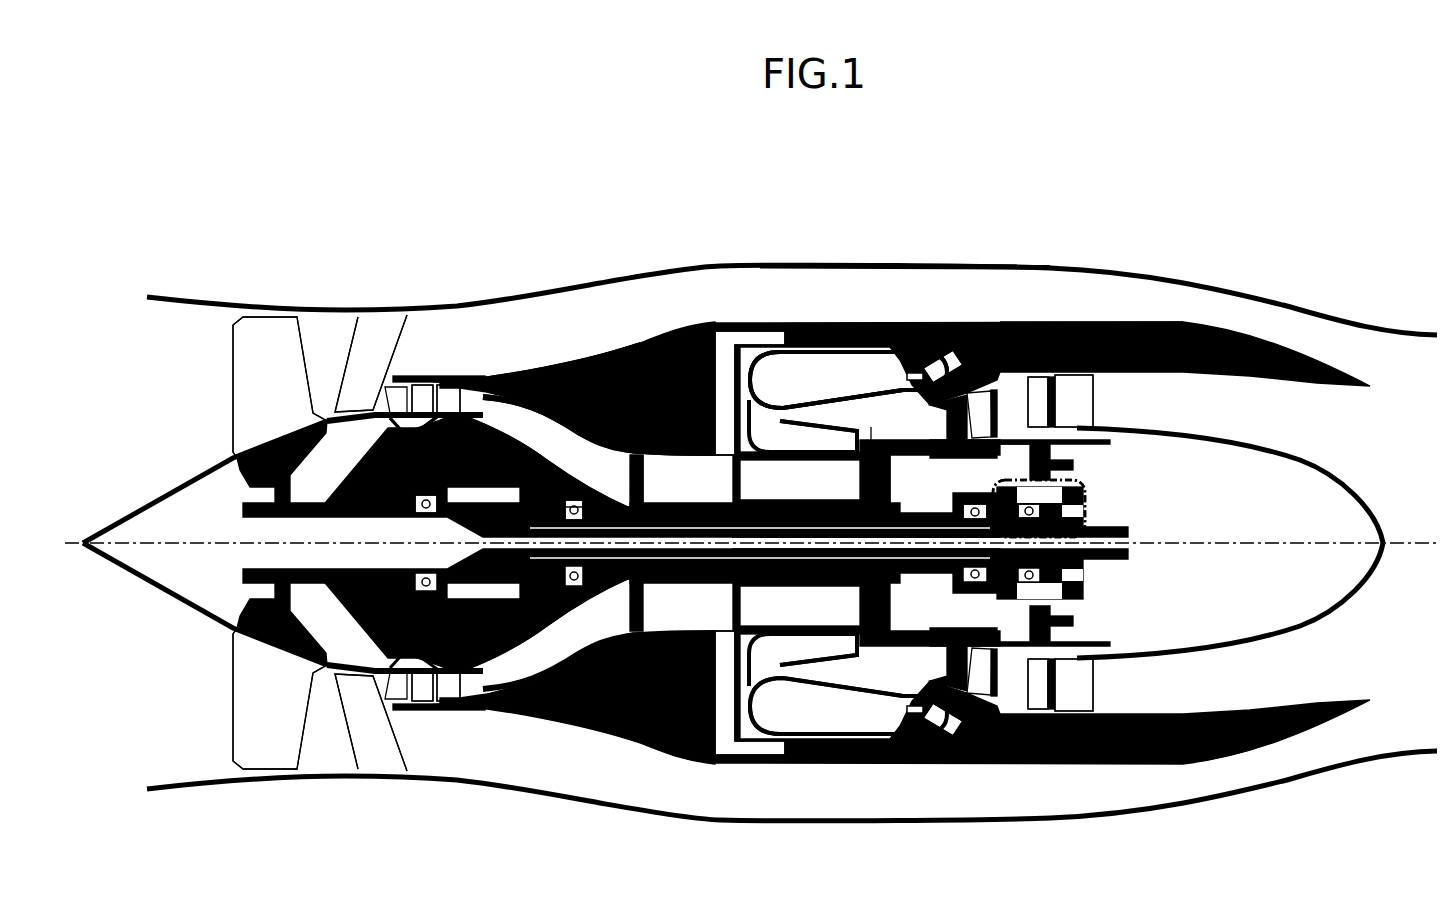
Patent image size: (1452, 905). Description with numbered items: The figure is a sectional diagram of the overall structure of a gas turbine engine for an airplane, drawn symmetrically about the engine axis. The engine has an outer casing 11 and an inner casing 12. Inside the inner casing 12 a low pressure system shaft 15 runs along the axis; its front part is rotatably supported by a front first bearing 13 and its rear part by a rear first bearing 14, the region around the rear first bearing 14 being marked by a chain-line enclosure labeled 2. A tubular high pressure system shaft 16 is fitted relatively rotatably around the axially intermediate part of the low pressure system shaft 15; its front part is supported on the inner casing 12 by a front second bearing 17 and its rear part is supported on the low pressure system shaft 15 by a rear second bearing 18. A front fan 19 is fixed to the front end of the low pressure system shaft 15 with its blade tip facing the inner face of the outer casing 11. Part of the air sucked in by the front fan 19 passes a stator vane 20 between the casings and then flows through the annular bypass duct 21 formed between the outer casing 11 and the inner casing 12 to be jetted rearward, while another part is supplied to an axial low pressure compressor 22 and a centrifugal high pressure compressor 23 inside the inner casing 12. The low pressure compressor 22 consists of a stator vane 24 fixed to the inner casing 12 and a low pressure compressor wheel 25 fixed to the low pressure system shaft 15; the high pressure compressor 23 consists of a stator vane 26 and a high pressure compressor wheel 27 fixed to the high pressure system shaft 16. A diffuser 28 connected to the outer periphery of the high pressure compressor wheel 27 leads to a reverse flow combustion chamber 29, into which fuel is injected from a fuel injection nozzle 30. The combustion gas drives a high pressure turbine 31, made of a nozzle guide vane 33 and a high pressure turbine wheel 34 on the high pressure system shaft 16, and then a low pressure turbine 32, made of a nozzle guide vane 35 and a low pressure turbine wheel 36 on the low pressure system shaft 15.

The bearing section (detail region) 2 is at (1100, 511).
The outer casing 11 is at (470, 300).
The inner casing 12 is at (583, 360).
The front first bearing 13 is at (438, 503).
The rear first bearing 14 is at (1040, 508).
The low pressure system shaft 15 is at (762, 530).
The high pressure system shaft 16 is at (800, 515).
The front second bearing 17 is at (572, 505).
The rear second bearing 18 is at (976, 504).
The front fan 19 is at (248, 360).
The stator vane 20 is at (372, 385).
The bypass duct 21 is at (861, 315).
The low pressure compressor 22 is at (455, 369).
The high pressure compressor 23 is at (646, 453).
The stator vane 24 is at (458, 405).
The low pressure compressor wheel 25 is at (402, 443).
The stator vane 26 is at (557, 458).
The high pressure compressor wheel 27 is at (722, 484).
The diffuser 28 is at (755, 338).
The reverse flow combustion chamber 29 is at (851, 389).
The fuel injection nozzle 30 is at (941, 358).
The high pressure turbine 31 is at (871, 427).
The low pressure turbine 32 is at (1060, 358).
The nozzle guide vane 33 is at (838, 434).
The high pressure turbine wheel 34 is at (878, 483).
The nozzle guide vane 35 is at (1015, 390).
The low pressure turbine wheel 36 is at (1040, 438).